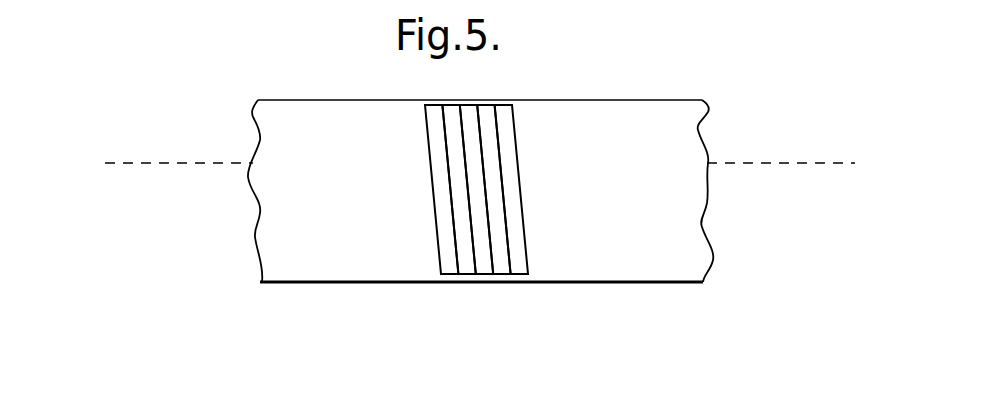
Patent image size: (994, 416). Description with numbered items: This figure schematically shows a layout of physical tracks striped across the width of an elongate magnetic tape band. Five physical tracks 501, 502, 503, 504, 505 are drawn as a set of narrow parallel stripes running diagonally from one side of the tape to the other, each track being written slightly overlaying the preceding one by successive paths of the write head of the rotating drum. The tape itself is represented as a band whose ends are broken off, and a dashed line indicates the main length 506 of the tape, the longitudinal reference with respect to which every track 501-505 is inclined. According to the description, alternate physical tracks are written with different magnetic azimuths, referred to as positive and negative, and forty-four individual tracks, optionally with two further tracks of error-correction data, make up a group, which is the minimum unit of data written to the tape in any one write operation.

The physical track 501 is at (432, 178).
The physical track 502 is at (463, 280).
The physical track 503 is at (483, 280).
The physical track 504 is at (503, 280).
The physical track 505 is at (522, 186).
The main length of the tape 506 is at (481, 165).